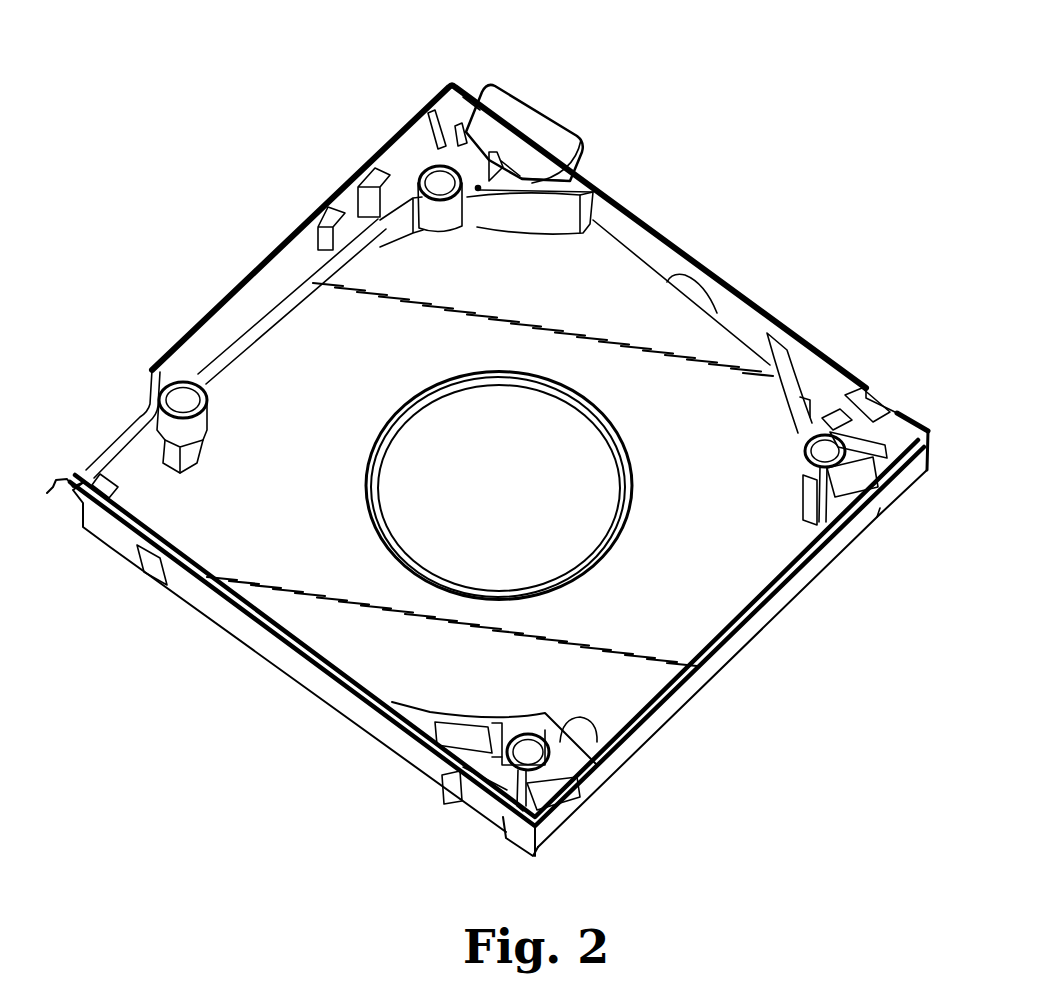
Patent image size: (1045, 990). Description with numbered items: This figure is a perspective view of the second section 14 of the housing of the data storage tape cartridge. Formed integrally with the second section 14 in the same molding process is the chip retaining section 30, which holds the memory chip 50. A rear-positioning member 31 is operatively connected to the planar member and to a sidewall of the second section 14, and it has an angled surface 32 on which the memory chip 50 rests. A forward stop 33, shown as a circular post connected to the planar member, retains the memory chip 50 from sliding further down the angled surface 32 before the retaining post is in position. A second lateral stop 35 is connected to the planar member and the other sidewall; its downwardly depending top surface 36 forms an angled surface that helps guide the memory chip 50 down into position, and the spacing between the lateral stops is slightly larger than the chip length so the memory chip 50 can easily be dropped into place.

The second section 14 is at (720, 278).
The chip retaining section 30 is at (597, 183).
The rear-positioning member 31 is at (512, 189).
The angled surface 32 is at (491, 151).
The forward stop 33 is at (478, 191).
The second lateral stop 35 is at (427, 131).
The downwardly depending top surface 36 is at (437, 88).
The memory chip 50 is at (550, 118).